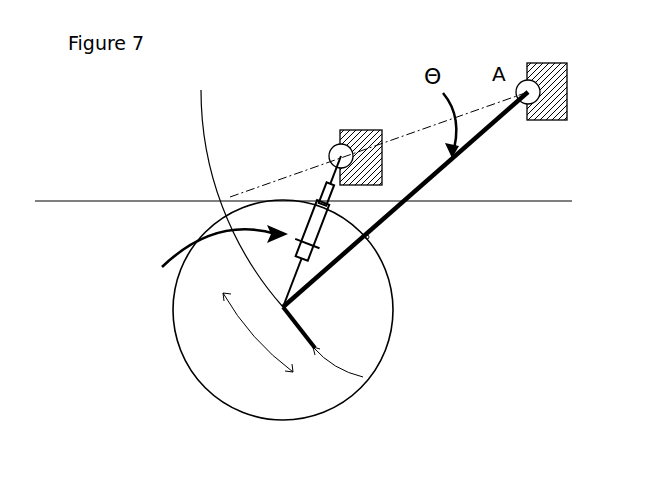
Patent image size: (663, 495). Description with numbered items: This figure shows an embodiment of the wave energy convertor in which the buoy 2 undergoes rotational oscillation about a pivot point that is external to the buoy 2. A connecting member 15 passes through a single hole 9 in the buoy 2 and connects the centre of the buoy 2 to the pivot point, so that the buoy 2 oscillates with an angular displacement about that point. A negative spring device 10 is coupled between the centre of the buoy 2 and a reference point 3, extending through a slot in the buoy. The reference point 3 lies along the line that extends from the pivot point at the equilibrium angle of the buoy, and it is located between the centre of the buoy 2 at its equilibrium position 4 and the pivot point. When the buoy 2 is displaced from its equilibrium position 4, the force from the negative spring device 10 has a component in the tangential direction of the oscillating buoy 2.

The buoy 2 is at (390, 347).
The reference point 3 is at (343, 150).
The equilibrium position 4 is at (257, 183).
The hole 9 is at (367, 238).
The negative spring device 10 is at (206, 262).
The connecting member 15 is at (437, 174).